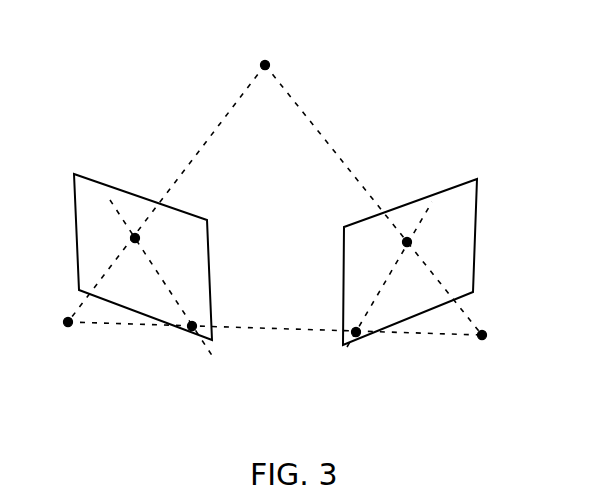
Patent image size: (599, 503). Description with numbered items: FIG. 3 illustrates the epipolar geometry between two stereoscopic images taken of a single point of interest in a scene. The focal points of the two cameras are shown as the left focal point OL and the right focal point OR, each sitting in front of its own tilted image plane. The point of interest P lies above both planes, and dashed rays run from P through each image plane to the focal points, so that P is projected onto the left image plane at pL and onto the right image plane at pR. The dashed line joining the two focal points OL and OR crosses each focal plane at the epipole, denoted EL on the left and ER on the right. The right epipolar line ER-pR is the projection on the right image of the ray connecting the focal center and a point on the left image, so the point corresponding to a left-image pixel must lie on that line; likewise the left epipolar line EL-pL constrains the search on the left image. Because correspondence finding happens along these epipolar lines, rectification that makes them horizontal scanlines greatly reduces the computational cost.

The point of interest P is at (268, 50).
The projection of point P on the left image plane pL is at (115, 228).
The projection of point P on the right image plane pR is at (429, 238).
The focal point of the left camera OL is at (49, 329).
The focal point of the right camera OR is at (504, 337).
The left epipole EL is at (185, 342).
The right epipole ER is at (367, 349).